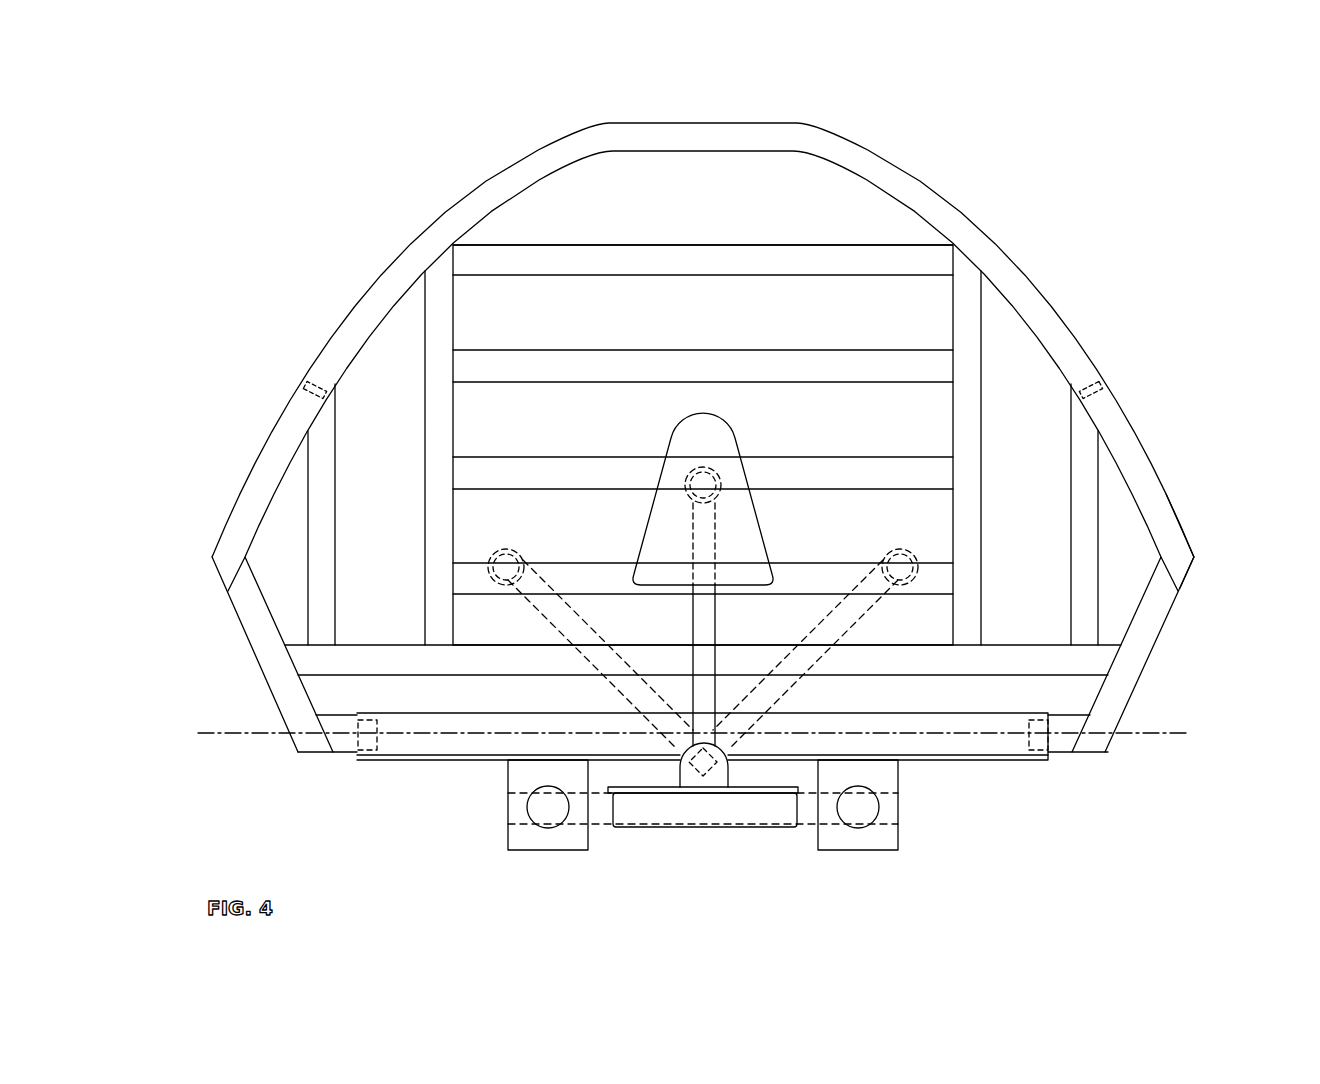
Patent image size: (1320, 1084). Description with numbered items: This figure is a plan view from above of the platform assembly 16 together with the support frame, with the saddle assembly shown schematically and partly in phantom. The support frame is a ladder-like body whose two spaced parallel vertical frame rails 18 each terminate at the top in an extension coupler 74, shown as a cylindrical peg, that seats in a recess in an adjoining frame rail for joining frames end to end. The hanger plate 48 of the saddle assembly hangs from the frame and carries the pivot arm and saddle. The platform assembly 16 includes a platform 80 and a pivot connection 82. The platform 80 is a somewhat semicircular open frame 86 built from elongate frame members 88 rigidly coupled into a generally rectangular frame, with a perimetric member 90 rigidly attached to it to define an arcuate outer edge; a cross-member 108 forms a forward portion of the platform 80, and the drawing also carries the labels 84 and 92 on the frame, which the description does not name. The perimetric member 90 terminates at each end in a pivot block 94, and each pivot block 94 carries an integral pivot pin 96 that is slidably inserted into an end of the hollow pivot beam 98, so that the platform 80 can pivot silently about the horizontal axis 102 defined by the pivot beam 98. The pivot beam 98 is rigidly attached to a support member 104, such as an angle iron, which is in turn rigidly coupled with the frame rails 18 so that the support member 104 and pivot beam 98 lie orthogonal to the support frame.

The platform assembly 16 is at (1093, 136).
The frame rails 18 is at (517, 837).
The hanger plate 48 is at (660, 812).
The extension coupler 74 is at (547, 813).
The platform 80 is at (1067, 310).
The pivot connection 82 is at (345, 768).
The fastener 84 is at (310, 393).
The platform frame 86 is at (818, 240).
The frame members 88 is at (887, 360).
The perimetric member 90 is at (1180, 545).
The side wall 92 is at (265, 642).
The pivot block 94 is at (347, 740).
The pivot pin 96 is at (377, 752).
The pivot beam 98 is at (435, 740).
The horizontal axis 102 is at (1160, 735).
The support member 104 is at (465, 762).
The cross-member 108 is at (542, 255).